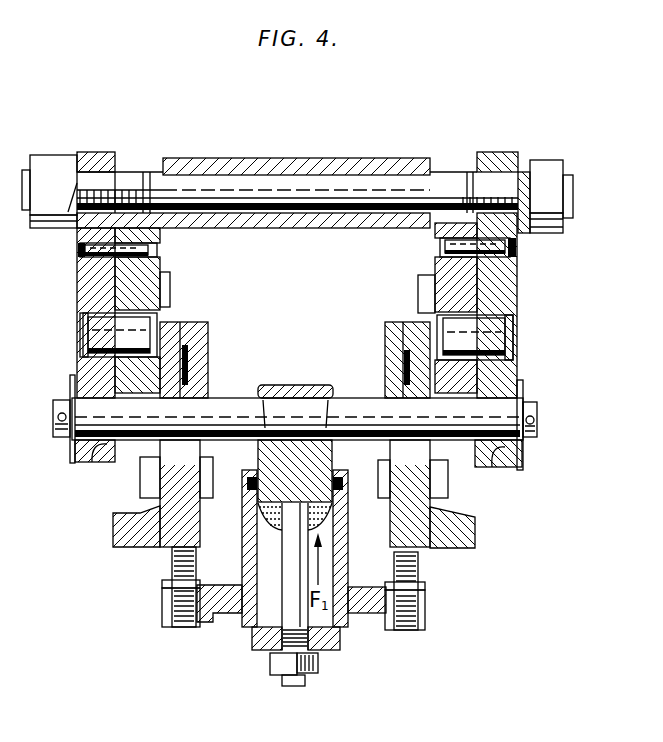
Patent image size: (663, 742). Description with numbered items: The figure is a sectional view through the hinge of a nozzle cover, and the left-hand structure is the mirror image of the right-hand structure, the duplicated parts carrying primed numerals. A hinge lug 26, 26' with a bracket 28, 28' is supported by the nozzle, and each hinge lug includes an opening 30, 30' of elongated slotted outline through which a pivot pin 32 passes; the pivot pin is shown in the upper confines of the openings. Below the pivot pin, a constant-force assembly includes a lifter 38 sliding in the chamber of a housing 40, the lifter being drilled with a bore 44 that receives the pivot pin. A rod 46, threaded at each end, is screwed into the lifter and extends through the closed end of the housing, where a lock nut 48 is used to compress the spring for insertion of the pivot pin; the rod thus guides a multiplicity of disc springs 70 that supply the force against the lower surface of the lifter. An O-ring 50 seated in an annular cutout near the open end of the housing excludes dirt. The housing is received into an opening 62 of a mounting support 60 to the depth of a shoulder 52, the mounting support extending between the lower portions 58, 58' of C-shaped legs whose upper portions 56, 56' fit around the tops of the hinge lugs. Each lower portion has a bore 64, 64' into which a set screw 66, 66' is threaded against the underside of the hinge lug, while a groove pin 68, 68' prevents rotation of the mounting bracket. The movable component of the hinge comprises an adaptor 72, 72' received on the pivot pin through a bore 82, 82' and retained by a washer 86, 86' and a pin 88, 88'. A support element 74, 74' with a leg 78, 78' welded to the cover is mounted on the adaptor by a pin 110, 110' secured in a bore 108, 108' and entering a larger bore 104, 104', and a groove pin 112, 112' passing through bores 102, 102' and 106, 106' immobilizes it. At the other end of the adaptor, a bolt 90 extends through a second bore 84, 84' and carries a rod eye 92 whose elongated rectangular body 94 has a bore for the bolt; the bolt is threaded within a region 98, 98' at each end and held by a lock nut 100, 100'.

The hinge lug 26 is at (115, 526).
The hinge lug 26' is at (476, 527).
The bracket 28 is at (153, 477).
The bracket 28' is at (435, 481).
The opening 30 is at (180, 493).
The opening 30' is at (410, 493).
The pivot pin 32 is at (222, 403).
The lifter 38 is at (258, 453).
The housing 40 is at (251, 630).
The bore 44 is at (285, 398).
The rod 46 is at (270, 650).
The lock nut 48 is at (277, 678).
The O-ring 50 is at (340, 476).
The shoulder 52 is at (233, 588).
The upper portion 56 is at (203, 349).
The upper portion 56' is at (390, 348).
The lower portion 58 is at (159, 591).
The lower portion 58' is at (430, 590).
The mounting support 60 is at (215, 613).
The opening 62 is at (347, 591).
The bore 64 is at (157, 608).
The bore 64' is at (432, 610).
The set screw 66 is at (164, 587).
The set screw 66' is at (430, 591).
The groove pin 68 is at (215, 357).
The groove pin 68' is at (378, 357).
The disc springs 70 is at (257, 532).
The adaptor 72 is at (74, 313).
The adaptor 72' is at (526, 305).
The support element 74 is at (166, 310).
The support element 74' is at (429, 308).
The leg 78 is at (188, 289).
The leg 78' is at (494, 298).
The bore 82 is at (86, 465).
The bore 82' is at (505, 467).
The second bore 84 is at (96, 140).
The second bore 84' is at (501, 147).
The washer 86 is at (46, 425).
The washer 86' is at (546, 425).
The pin 88 is at (36, 418).
The pin 88' is at (555, 411).
The bolt 90 is at (150, 180).
The rod eye 92 is at (321, 160).
The body 94 is at (248, 158).
The threaded region 98 is at (120, 163).
The threaded region 98' is at (474, 172).
The lock nut 100 is at (49, 176).
The lock nut 100' is at (568, 183).
The bore 102 is at (146, 246).
The bore 102' is at (441, 246).
The bore 104 is at (152, 324).
The bore 104' is at (446, 318).
The bore 106 is at (55, 250).
The bore 106' is at (516, 261).
The bore 108 is at (60, 332).
The bore 108' is at (543, 340).
The pin 110 is at (91, 335).
The pin 110' is at (511, 336).
The groove pin 112 is at (86, 264).
The groove pin 112' is at (548, 246).